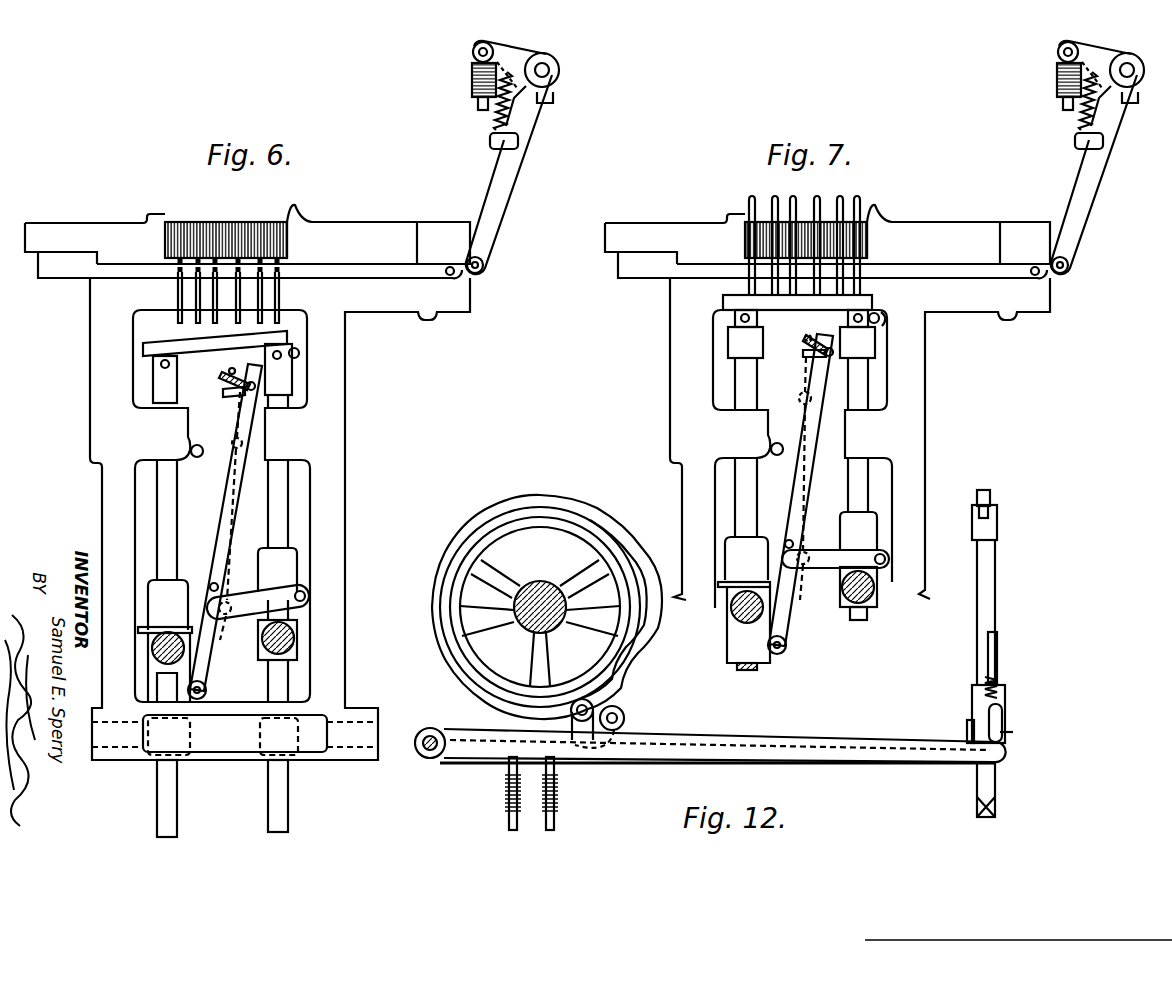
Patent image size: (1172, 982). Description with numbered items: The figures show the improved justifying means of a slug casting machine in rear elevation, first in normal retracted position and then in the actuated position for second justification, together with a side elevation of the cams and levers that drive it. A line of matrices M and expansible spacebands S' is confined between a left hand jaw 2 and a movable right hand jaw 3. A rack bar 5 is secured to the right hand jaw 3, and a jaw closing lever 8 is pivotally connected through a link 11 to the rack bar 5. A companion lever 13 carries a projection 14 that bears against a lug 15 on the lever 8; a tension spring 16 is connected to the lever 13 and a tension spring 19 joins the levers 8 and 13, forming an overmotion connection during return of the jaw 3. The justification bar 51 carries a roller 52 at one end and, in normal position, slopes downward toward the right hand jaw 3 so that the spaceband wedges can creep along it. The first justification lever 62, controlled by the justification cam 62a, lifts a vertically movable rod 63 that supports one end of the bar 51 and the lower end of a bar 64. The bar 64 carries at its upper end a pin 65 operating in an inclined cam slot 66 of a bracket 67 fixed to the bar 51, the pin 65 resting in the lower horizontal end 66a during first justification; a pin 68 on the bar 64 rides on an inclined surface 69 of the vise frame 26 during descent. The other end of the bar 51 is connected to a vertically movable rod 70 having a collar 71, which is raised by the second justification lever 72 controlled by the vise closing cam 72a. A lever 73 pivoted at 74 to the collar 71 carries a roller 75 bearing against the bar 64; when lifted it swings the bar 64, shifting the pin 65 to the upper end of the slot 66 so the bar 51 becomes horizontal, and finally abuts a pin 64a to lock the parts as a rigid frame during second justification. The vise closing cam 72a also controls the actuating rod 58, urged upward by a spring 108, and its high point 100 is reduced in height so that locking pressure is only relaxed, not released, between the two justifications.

In FIG. 6, the left hand jaw 2 is at (350, 233).
In FIG. 7, the left hand jaw 2 is at (906, 233).
In FIG. 6, the right hand jaw 3 is at (80, 232).
In FIG. 7, the right hand jaw 3 is at (650, 232).
In FIG. 6, the rack bar 5 is at (392, 276).
In FIG. 7, the rack bar 5 is at (967, 276).
In FIG. 6, the lever 8 is at (512, 194).
In FIG. 7, the lever 8 is at (1094, 192).
In FIG. 6, the link 11 is at (466, 275).
In FIG. 7, the link 11 is at (1050, 275).
In FIG. 6, the lever 13 is at (552, 52).
In FIG. 7, the lever 13 is at (1122, 52).
In FIG. 6, the projection 14 is at (538, 127).
In FIG. 7, the projection 14 is at (1115, 128).
In FIG. 6, the lug 15 is at (555, 97).
In FIG. 7, the lug 15 is at (1140, 97).
In FIG. 6, the tension spring 16 is at (470, 85).
In FIG. 7, the tension spring 16 is at (1055, 85).
In FIG. 6, the tension spring 19 is at (493, 120).
In FIG. 7, the tension spring 19 is at (1078, 120).
In FIG. 6, the vise frame 26 is at (340, 432).
In FIG. 7, the vise frame 26 is at (924, 422).
In FIG. 6, the justification bar 51 is at (168, 348).
In FIG. 7, the justification bar 51 is at (722, 301).
In FIG. 12, the justification bar 51 is at (987, 489).
In FIG. 6, the roller 52 is at (300, 352).
In FIG. 7, the roller 52 is at (884, 322).
In FIG. 12, the roller 52 is at (971, 516).
In FIG. 12, the actuating rod 58 is at (998, 651).
In FIG. 6, the first justification lever 62 is at (150, 648).
In FIG. 7, the first justification lever 62 is at (730, 614).
In FIG. 12, the first justification lever 62 is at (627, 719).
In FIG. 12, the justification cam 62a is at (650, 645).
In FIG. 6, the vertically movable rod 63 is at (168, 500).
In FIG. 7, the vertically movable rod 63 is at (748, 501).
In FIG. 12, the vertically movable rod 63 is at (976, 812).
In FIG. 6, the bar 64 is at (222, 523).
In FIG. 7, the bar 64 is at (802, 501).
In FIG. 6, the pin 64a is at (212, 582).
In FIG. 7, the pin 64a is at (795, 541).
In FIG. 6, the pin 65 is at (240, 394).
In FIG. 7, the pin 65 is at (805, 344).
In FIG. 6, the inclined cam slot 66 is at (240, 378).
In FIG. 7, the inclined cam slot 66 is at (840, 332).
In FIG. 6, the lower horizontal end 66a is at (256, 384).
In FIG. 7, the lower horizontal end 66a is at (830, 358).
In FIG. 6, the bracket 67 is at (222, 391).
In FIG. 7, the bracket 67 is at (804, 358).
In FIG. 6, the pin 68 is at (243, 443).
In FIG. 7, the pin 68 is at (799, 401).
In FIG. 6, the inclined surface 69 is at (203, 459).
In FIG. 7, the inclined surface 69 is at (812, 450).
In FIG. 6, the vertically movable rod 70 is at (282, 504).
In FIG. 7, the vertically movable rod 70 is at (862, 489).
In FIG. 12, the vertically movable rod 70 is at (990, 592).
In FIG. 6, the collar 71 is at (290, 565).
In FIG. 7, the collar 71 is at (870, 530).
In FIG. 6, the second justification lever 72 is at (262, 655).
In FIG. 7, the second justification lever 72 is at (878, 600).
In FIG. 12, the second justification lever 72 is at (582, 728).
In FIG. 12, the vise closing cam 72a is at (450, 618).
In FIG. 6, the lever 73 is at (241, 598).
In FIG. 7, the lever 73 is at (822, 570).
In FIG. 12, the lever 73 is at (968, 740).
In FIG. 6, the pivot 74 is at (306, 597).
In FIG. 6, the roller 75 is at (228, 616).
In FIG. 7, the roller 75 is at (806, 567).
In FIG. 12, the high point 100 is at (645, 600).
In FIG. 12, the spring 108 is at (1000, 684).
In FIG. 6, the matrices M is at (250, 222).
In FIG. 7, the matrices M is at (828, 222).
In FIG. 6, the spacebands S' is at (246, 290).
In FIG. 7, the spacebands S' is at (804, 236).